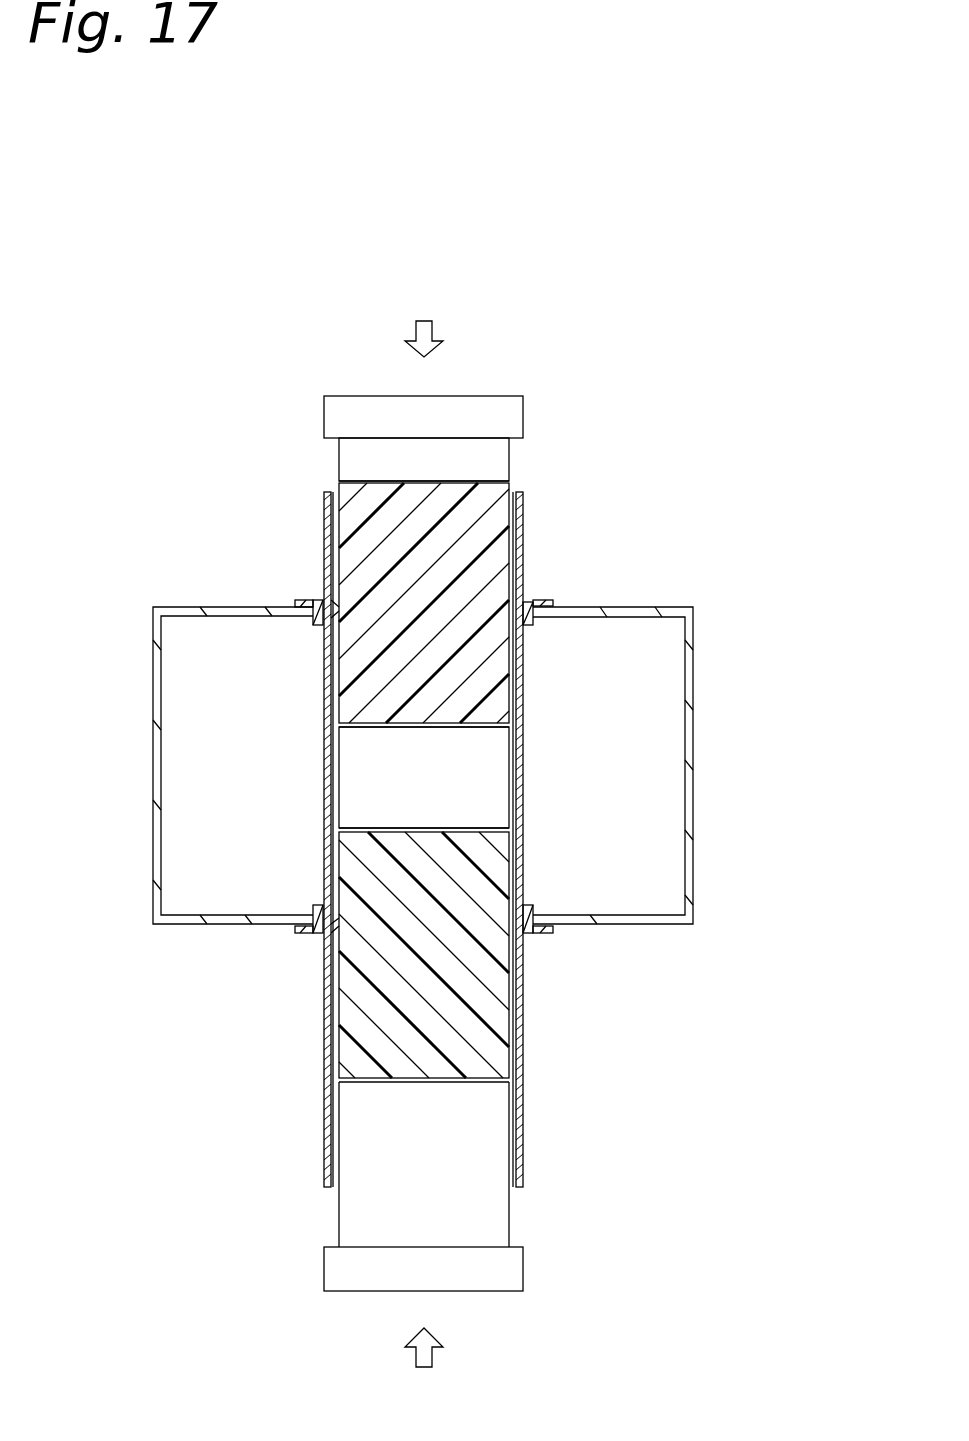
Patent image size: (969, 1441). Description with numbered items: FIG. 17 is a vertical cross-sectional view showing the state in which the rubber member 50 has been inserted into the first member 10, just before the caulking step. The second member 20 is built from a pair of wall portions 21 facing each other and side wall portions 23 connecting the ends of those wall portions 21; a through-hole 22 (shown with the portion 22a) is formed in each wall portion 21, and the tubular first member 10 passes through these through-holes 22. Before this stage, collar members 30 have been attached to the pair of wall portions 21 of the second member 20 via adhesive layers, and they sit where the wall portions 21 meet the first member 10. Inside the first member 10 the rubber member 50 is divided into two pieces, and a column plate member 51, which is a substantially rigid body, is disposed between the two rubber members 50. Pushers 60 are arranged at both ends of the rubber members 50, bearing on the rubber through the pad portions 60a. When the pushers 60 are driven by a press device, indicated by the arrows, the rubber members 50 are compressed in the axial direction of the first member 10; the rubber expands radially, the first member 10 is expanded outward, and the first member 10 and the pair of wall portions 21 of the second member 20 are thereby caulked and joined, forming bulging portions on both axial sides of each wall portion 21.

The first member 10 is at (527, 538).
The second member 20 is at (654, 606).
The wall portions 21 is at (183, 610).
The through-holes 22 is at (430, 766).
The flange tab 22a is at (312, 604).
The side wall portions 23 is at (153, 705).
The collar members 30 is at (308, 600).
The rubber member 50 is at (358, 512).
The column plate member 51 is at (374, 783).
The pushers 60 is at (527, 414).
The press pad 60a is at (498, 455).